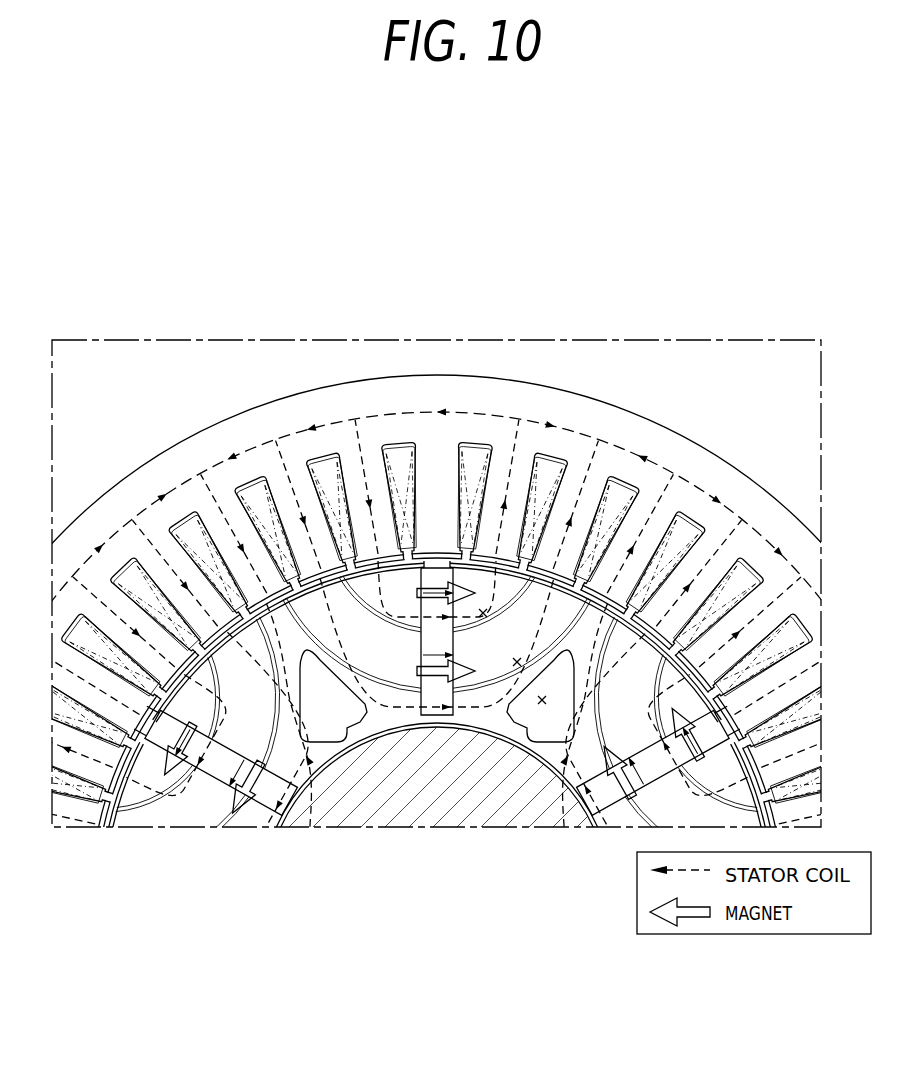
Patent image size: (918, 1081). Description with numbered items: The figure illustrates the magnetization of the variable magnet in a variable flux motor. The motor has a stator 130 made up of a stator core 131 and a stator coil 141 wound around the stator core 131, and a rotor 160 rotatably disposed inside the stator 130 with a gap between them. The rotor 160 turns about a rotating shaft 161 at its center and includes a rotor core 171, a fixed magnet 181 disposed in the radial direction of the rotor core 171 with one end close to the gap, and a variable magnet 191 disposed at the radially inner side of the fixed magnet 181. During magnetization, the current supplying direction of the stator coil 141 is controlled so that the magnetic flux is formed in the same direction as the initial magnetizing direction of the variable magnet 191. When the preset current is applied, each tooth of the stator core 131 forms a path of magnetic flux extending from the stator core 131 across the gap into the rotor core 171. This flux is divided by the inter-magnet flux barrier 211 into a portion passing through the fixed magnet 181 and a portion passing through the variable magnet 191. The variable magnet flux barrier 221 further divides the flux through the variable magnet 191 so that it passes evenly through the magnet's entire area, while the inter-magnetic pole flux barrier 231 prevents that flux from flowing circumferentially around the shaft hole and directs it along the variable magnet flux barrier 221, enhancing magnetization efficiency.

The stator 130 is at (459, 571).
The stator core 131 is at (487, 398).
The stator coil 141 is at (467, 442).
The rotor 160 is at (437, 818).
The rotating shaft 161 is at (353, 785).
The rotor core 171 is at (311, 766).
The fixed magnet 181 is at (416, 606).
The variable magnet 191 is at (433, 692).
The inter-magnet flux barrier 211 is at (483, 616).
The variable magnet flux barrier 221 is at (517, 665).
The inter-magnetic pole flux barrier 231 is at (543, 703).